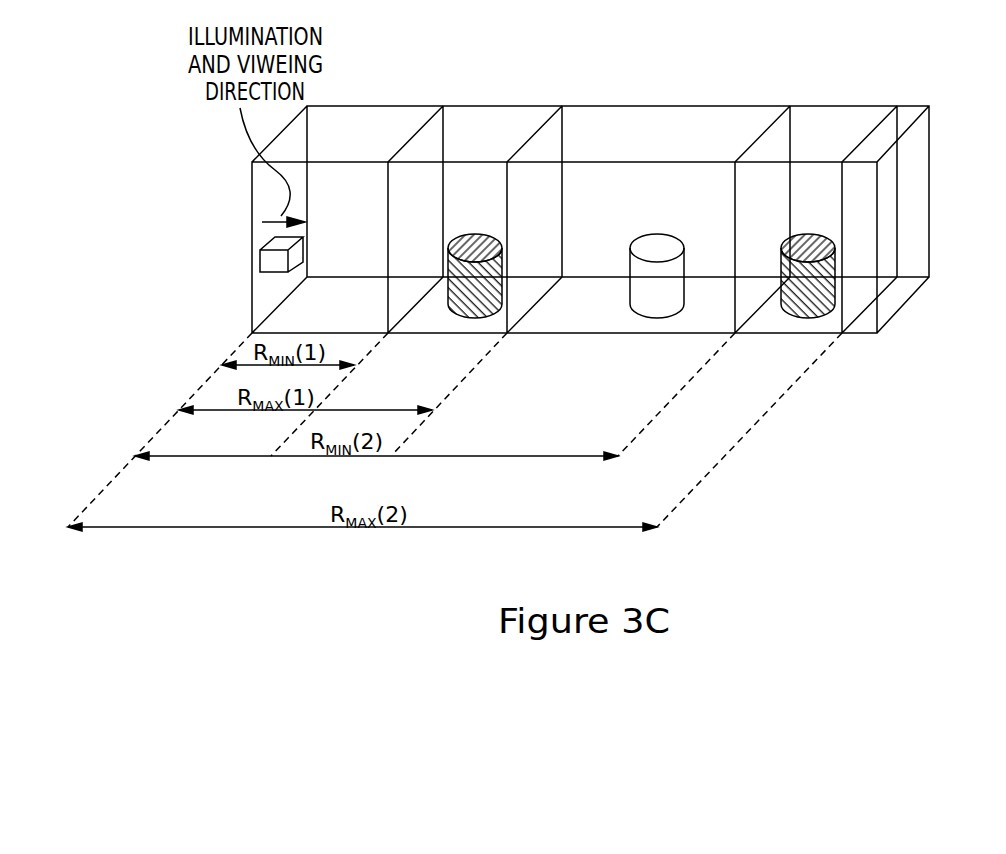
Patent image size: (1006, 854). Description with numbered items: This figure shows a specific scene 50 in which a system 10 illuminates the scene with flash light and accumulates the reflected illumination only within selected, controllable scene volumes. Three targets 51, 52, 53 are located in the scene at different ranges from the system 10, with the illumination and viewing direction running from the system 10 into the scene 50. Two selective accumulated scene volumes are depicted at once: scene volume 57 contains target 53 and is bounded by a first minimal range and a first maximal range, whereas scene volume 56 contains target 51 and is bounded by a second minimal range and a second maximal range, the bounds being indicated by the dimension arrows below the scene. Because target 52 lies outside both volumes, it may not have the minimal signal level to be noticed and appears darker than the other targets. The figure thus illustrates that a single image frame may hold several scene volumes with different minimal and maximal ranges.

The system 10 is at (275, 276).
The scene 50 is at (929, 190).
The target 51 is at (782, 288).
The target 52 is at (630, 287).
The target 53 is at (458, 315).
The scene volume 56 is at (897, 104).
The scene volume 57 is at (562, 104).